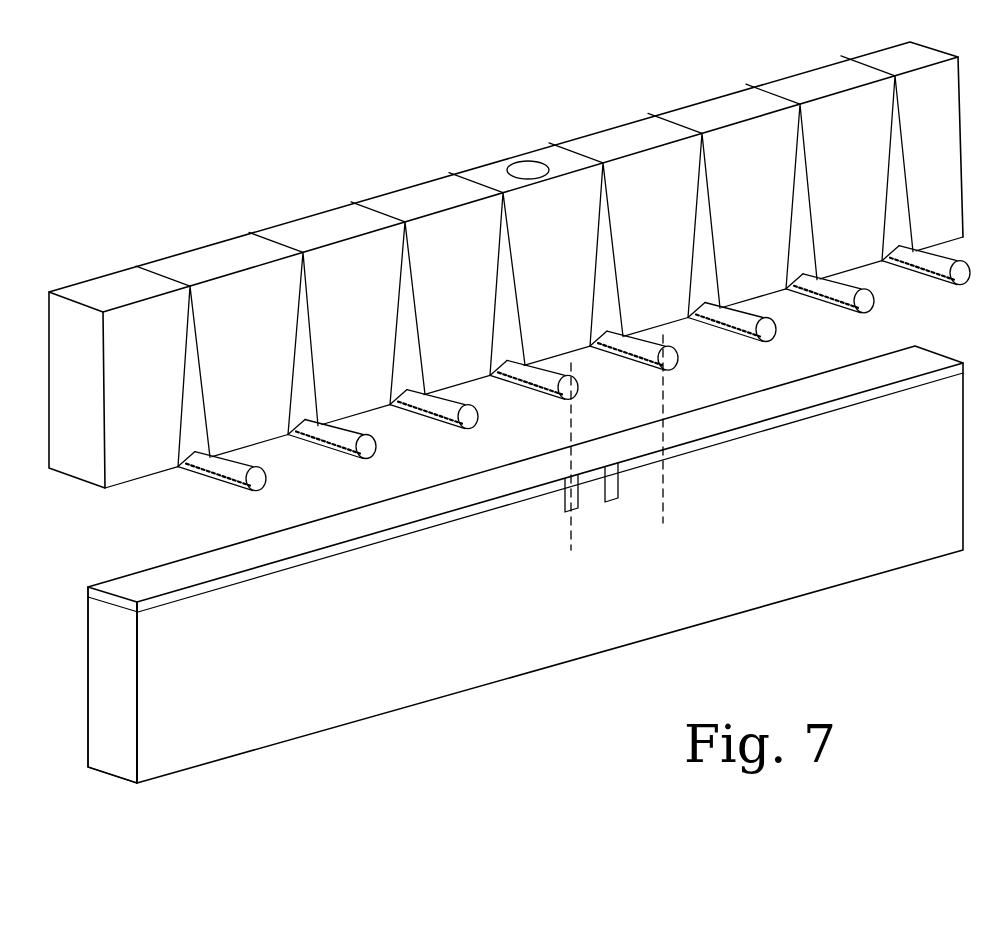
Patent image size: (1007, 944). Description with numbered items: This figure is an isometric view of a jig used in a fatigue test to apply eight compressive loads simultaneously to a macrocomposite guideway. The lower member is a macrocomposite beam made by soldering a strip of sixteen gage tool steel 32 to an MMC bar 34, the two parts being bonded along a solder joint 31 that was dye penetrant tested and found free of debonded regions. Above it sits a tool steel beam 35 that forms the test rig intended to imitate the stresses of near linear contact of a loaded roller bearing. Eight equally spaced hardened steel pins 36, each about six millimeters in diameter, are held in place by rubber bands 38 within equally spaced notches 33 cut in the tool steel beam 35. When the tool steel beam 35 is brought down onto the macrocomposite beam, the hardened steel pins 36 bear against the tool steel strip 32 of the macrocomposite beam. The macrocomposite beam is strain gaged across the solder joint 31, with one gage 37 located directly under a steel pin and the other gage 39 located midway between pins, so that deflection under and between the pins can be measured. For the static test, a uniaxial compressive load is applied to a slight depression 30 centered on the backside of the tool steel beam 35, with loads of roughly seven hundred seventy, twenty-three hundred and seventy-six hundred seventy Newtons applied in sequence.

The slight depression 30 is at (515, 163).
The solder joint 31 is at (519, 599).
The tool steel strip 32 is at (135, 582).
The notches 33 is at (183, 437).
The MMC bar 34 is at (120, 748).
The tool steel beam 35 is at (218, 253).
The hardened steel pins 36 is at (865, 305).
The strain gage 37 is at (578, 505).
The rubber bands 38 is at (808, 143).
The strain gage 39 is at (615, 493).